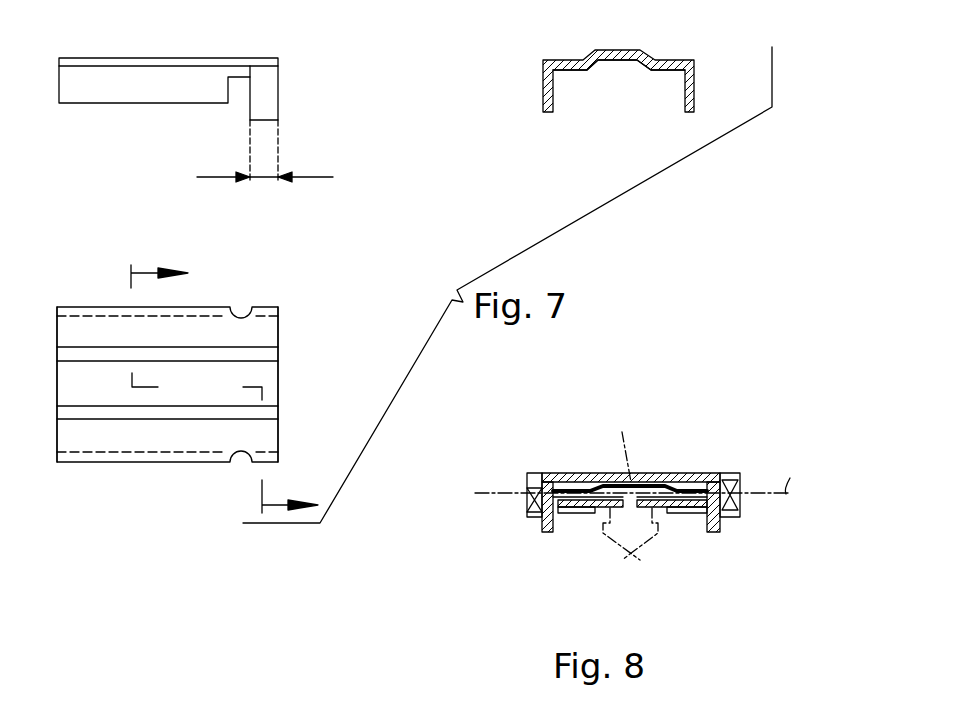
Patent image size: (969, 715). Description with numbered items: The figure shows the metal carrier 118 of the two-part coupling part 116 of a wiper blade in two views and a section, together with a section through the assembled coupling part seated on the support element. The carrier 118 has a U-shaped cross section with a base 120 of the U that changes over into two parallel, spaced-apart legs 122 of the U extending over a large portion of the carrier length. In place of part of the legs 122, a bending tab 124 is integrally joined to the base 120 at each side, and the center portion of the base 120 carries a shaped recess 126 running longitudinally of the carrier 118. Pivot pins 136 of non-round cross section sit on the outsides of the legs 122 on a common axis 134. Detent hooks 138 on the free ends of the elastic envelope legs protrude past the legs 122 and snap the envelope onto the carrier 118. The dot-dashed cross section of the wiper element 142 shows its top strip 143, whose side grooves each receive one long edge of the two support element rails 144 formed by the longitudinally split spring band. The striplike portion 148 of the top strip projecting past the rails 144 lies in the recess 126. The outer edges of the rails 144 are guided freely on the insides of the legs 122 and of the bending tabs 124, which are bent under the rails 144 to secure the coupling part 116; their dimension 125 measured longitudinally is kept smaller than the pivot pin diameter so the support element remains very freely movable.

In FIG. 8, the coupling part 116 is at (682, 465).
In FIG. 7, the carrier 118 is at (200, 51).
In FIG. 7, the base of the U 120 is at (272, 54).
In FIG. 7, the legs of the U 122 is at (110, 96).
In FIG. 7, the bending tab 124 is at (265, 100).
In FIG. 8, the bending tab 124 is at (577, 513).
In FIG. 7, the dimension of the bending tabs 125 is at (264, 177).
In FIG. 7, the shaped recess 126 is at (620, 70).
In FIG. 8, the common axis 134 is at (793, 447).
In FIG. 8, the pivot pins 136 is at (528, 488).
In FIG. 8, the detent hooks 138 is at (548, 533).
In FIG. 8, the wiper element 142 is at (640, 545).
In FIG. 8, the top strip 143 is at (605, 535).
In FIG. 8, the support element rails 144 is at (565, 518).
In FIG. 8, the striplike portion 148 is at (625, 444).